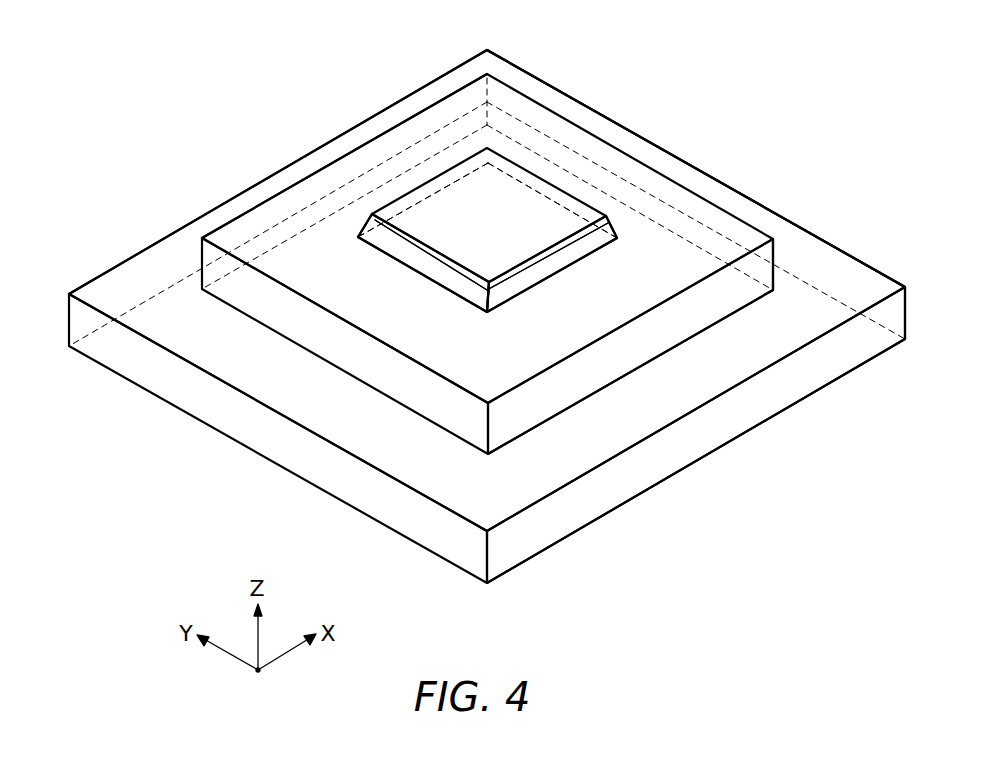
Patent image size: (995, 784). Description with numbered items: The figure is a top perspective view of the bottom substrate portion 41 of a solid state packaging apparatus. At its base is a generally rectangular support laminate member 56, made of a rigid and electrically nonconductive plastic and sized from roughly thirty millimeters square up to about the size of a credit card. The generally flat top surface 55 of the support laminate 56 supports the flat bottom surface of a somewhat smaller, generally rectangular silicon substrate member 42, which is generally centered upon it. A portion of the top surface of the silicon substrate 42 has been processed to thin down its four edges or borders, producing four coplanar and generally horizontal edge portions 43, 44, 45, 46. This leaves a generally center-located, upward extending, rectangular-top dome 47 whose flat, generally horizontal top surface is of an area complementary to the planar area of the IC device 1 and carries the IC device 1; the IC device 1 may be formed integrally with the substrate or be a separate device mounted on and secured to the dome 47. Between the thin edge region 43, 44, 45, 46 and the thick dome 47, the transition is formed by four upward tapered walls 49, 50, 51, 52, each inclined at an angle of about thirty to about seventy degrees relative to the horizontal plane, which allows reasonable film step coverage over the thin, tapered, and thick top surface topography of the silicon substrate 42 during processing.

The IC device 1 is at (462, 215).
The bottom substrate portion 41 is at (604, 46).
The silicon substrate member 42 is at (306, 343).
The edge portion 43 is at (588, 318).
The edge portion 44 is at (603, 160).
The edge portion 45 is at (332, 190).
The edge portion 46 is at (347, 285).
The dome 47 is at (590, 245).
The tapered wall 49 is at (510, 285).
The tapered wall 50 is at (448, 278).
The tapered wall 51 is at (419, 187).
The tapered wall 52 is at (557, 181).
The top surface of support laminate 55 is at (575, 453).
The support laminate member 56 is at (537, 532).